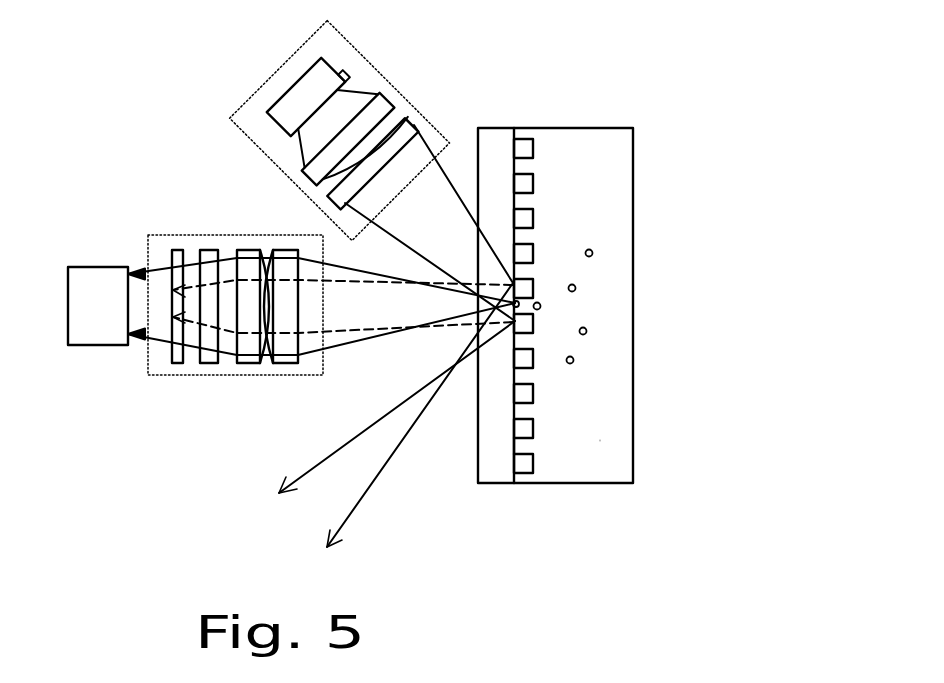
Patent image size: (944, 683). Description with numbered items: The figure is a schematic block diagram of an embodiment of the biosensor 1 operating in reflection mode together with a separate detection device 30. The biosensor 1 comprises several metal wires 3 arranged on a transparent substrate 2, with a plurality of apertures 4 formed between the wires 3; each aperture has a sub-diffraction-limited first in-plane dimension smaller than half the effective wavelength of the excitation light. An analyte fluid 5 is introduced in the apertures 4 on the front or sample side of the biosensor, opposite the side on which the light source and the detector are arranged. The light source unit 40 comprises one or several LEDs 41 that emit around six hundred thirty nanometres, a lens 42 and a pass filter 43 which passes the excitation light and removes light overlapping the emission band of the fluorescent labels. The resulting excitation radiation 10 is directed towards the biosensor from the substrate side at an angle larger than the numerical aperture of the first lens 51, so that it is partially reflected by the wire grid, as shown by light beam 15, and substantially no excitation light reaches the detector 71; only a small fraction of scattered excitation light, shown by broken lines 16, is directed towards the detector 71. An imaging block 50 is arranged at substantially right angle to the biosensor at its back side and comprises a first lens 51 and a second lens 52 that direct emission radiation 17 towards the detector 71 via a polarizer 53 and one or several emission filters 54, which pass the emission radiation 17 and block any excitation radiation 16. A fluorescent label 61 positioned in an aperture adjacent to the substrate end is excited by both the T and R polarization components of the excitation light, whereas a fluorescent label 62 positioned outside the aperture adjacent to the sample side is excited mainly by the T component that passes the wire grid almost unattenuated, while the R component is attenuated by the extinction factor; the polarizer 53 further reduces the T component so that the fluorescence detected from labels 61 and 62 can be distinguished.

The biosensor 1 is at (513, 512).
The transparent substrate 2 is at (498, 483).
The wires 3 is at (533, 427).
The apertures 4 is at (527, 445).
The analyte fluid 5 is at (598, 434).
The excitation radiation 10 is at (447, 187).
The light beam 15 is at (335, 450).
The scattered excitation light 16 is at (347, 332).
The emission radiation 17 is at (360, 341).
The detection device 30 is at (247, 412).
The light source unit 40 is at (257, 97).
The LEDs 41 is at (341, 78).
The lens 42 is at (381, 95).
The pass filter 43 is at (415, 120).
The imaging block 50 is at (190, 375).
The first lens 51 is at (290, 250).
The second lens 52 is at (250, 250).
The polarizer 53 is at (208, 250).
The emission filter 54 is at (177, 250).
The fluorescent label 61 is at (519, 302).
The fluorescent label 62 is at (540, 308).
The detector 71 is at (100, 267).